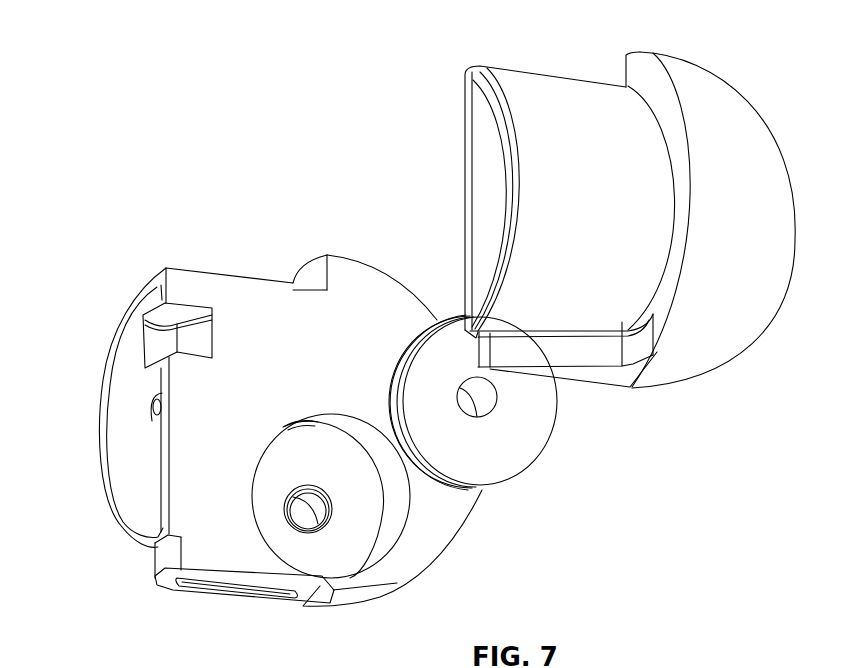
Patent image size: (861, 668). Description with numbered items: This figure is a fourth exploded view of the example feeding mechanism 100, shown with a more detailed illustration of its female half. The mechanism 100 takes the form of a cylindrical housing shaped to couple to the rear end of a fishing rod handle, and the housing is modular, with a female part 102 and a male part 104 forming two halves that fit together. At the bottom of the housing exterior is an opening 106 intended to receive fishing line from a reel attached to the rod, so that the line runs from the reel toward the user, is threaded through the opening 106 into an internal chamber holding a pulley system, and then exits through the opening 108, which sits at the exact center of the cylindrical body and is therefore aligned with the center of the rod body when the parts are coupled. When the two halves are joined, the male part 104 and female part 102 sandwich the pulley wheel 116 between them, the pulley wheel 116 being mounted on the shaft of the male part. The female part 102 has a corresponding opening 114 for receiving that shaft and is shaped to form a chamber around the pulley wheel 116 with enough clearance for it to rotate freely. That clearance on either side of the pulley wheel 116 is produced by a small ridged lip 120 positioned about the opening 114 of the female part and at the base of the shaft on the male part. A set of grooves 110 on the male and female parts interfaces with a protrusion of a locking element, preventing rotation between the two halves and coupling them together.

The mechanism 100 is at (171, 62).
The female part 102 is at (132, 307).
The male part 104 is at (467, 78).
The opening 106 is at (233, 582).
The opening 108 is at (150, 412).
The grooves 110 is at (180, 312).
The opening 114 is at (343, 512).
The pulley wheel 116 is at (513, 455).
The ridged lip 120 is at (308, 532).